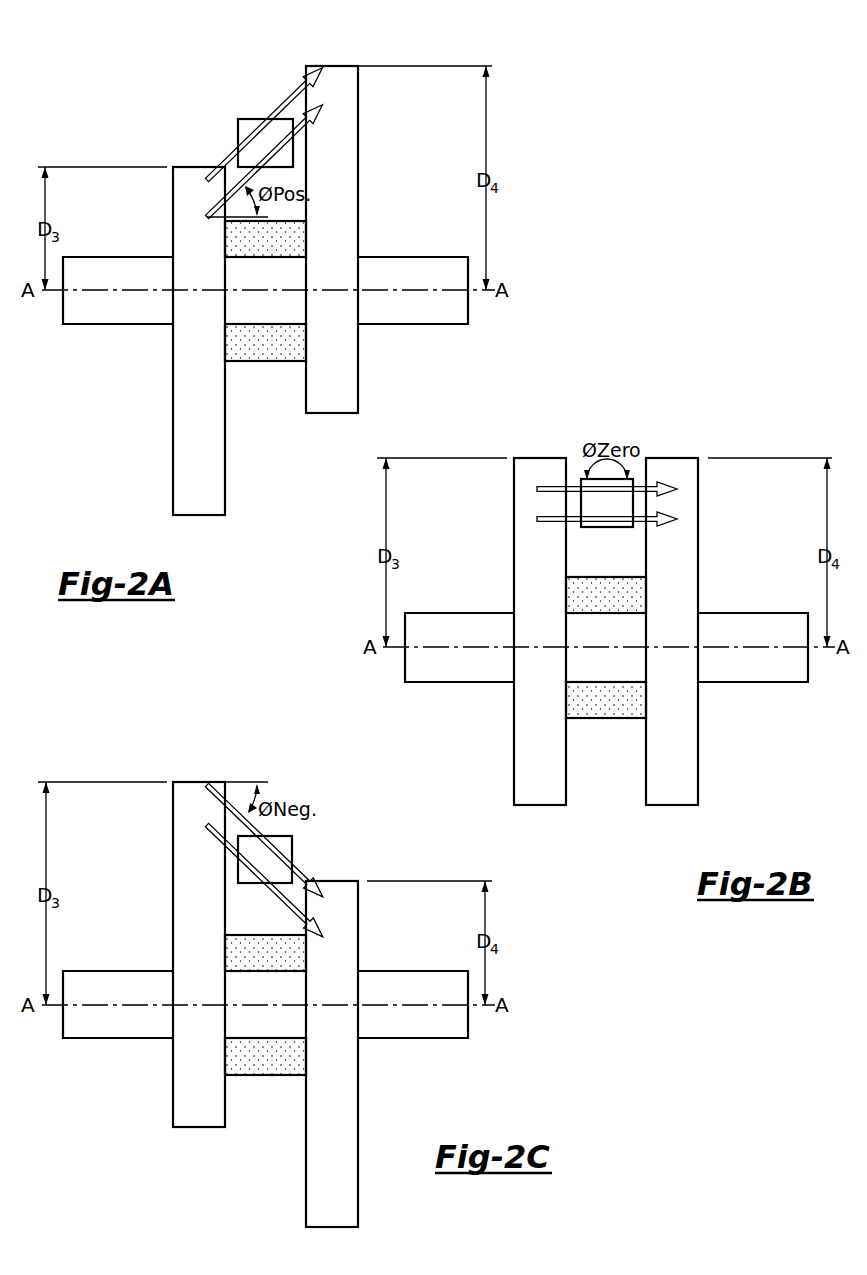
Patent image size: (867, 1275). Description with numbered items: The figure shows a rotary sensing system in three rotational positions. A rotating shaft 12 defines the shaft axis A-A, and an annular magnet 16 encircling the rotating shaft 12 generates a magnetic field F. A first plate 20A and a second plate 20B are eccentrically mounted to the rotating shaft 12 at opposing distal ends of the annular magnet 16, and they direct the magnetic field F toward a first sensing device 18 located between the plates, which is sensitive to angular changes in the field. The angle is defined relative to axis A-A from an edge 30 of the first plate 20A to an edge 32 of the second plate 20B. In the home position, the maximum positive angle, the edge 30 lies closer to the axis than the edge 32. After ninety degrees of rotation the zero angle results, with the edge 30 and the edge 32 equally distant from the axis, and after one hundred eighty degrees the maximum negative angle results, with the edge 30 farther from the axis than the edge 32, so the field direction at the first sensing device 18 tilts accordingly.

In FIG. 2A, the rotating shaft 12 is at (102, 324).
In FIG. 2B, the rotating shaft 12 is at (445, 682).
In FIG. 2C, the rotating shaft 12 is at (103, 1038).
In FIG. 2A, the annular magnet 16 is at (268, 361).
In FIG. 2B, the annular magnet 16 is at (605, 718).
In FIG. 2C, the annular magnet 16 is at (266, 1075).
In FIG. 2A, the first sensing device 18 is at (255, 119).
In FIG. 2B, the first sensing device 18 is at (598, 527).
In FIG. 2C, the first sensing device 18 is at (253, 883).
In FIG. 2A, the first plate 20A is at (173, 472).
In FIG. 2B, the first plate 20A is at (514, 793).
In FIG. 2C, the first plate 20A is at (193, 1127).
In FIG. 2A, the second plate 20B is at (358, 355).
In FIG. 2B, the second plate 20B is at (698, 767).
In FIG. 2C, the second plate 20B is at (358, 1195).
In FIG. 2A, the edge of the first plate 30 is at (196, 167).
In FIG. 2B, the edge of the first plate 30 is at (538, 458).
In FIG. 2C, the edge of the first plate 30 is at (196, 782).
In FIG. 2A, the edge of the second plate 32 is at (338, 66).
In FIG. 2B, the edge of the second plate 32 is at (680, 458).
In FIG. 2C, the edge of the second plate 32 is at (338, 881).